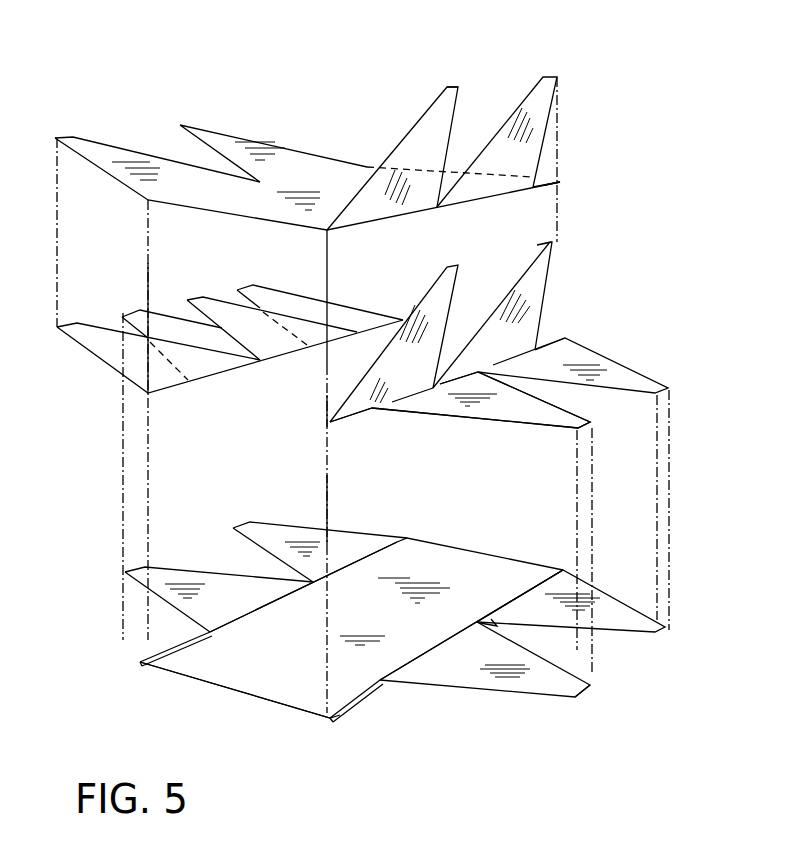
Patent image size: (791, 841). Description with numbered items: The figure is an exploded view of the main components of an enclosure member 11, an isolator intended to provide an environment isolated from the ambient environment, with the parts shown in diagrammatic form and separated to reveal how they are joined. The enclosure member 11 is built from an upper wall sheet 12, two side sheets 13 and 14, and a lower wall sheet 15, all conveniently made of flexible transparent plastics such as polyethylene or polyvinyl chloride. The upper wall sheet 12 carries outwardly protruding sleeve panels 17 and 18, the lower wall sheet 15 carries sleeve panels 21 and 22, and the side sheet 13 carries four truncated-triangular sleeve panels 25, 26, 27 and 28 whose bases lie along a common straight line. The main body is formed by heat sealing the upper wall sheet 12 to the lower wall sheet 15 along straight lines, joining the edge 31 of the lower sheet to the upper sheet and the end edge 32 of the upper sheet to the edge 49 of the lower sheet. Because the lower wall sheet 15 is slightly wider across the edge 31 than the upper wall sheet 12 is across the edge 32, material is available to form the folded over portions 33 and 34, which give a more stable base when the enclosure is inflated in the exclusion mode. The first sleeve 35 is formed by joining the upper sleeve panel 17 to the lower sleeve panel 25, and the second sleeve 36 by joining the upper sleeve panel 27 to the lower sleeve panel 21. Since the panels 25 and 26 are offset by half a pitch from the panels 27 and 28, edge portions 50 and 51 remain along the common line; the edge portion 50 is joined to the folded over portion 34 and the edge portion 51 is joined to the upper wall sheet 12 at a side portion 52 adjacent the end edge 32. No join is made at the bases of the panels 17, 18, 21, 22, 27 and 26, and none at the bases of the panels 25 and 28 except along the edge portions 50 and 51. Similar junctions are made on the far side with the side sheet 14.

The enclosure member 11 is at (108, 498).
The upper wall sheet 12 is at (325, 135).
The side sheet 13 is at (455, 356).
The side sheet 14 is at (108, 383).
The lower wall sheet 15 is at (384, 637).
The sleeve panel 17 is at (423, 115).
The sleeve panel 18 is at (523, 103).
The sleeve panel 21 is at (500, 682).
The sleeve panel 22 is at (617, 610).
The sleeve panel 25 is at (448, 282).
The sleeve panel 26 is at (538, 268).
The sleeve panel 27 is at (520, 415).
The sleeve panel 28 is at (622, 373).
The edge 31 is at (263, 699).
The edge 32 is at (542, 180).
The folded over portion 33 is at (147, 667).
The folded over portion 34 is at (327, 722).
The first sleeve 35 is at (424, 98).
The second sleeve 36 is at (540, 708).
The edge 49 is at (487, 558).
The edge portion 50 is at (350, 417).
The edge portion 51 is at (557, 337).
The side portion 52 is at (540, 190).